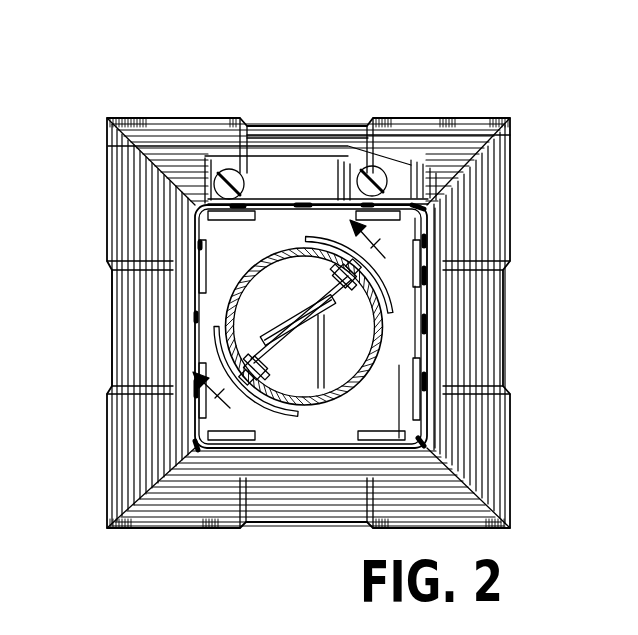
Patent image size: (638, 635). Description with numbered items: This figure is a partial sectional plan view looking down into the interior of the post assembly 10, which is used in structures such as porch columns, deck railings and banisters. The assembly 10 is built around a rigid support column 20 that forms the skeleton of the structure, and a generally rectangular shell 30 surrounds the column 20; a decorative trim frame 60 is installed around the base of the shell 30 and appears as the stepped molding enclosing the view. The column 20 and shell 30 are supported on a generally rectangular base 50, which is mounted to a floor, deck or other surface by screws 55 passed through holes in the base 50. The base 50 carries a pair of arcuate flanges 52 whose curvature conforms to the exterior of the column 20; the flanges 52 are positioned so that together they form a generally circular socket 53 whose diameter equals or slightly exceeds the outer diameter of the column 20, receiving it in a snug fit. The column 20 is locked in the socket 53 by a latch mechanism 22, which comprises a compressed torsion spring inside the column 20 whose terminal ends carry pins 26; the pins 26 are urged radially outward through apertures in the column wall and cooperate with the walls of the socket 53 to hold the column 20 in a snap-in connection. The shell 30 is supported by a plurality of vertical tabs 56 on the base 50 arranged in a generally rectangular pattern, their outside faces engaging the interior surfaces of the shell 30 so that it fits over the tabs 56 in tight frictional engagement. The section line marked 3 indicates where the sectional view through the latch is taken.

The post assembly 10 is at (432, 95).
The support column 20 is at (263, 246).
The shell 30 is at (301, 192).
The screws 55 is at (218, 160).
The vertical tabs 56 is at (180, 165).
The decorative trim frame 60 is at (116, 162).
The base 50 is at (385, 345).
The arcuate flanges 52 is at (186, 328).
The circular socket 53 is at (286, 306).
The latch mechanism 22 is at (296, 320).
The pins 26 is at (330, 271).
The section line 3- 3 is at (297, 324).